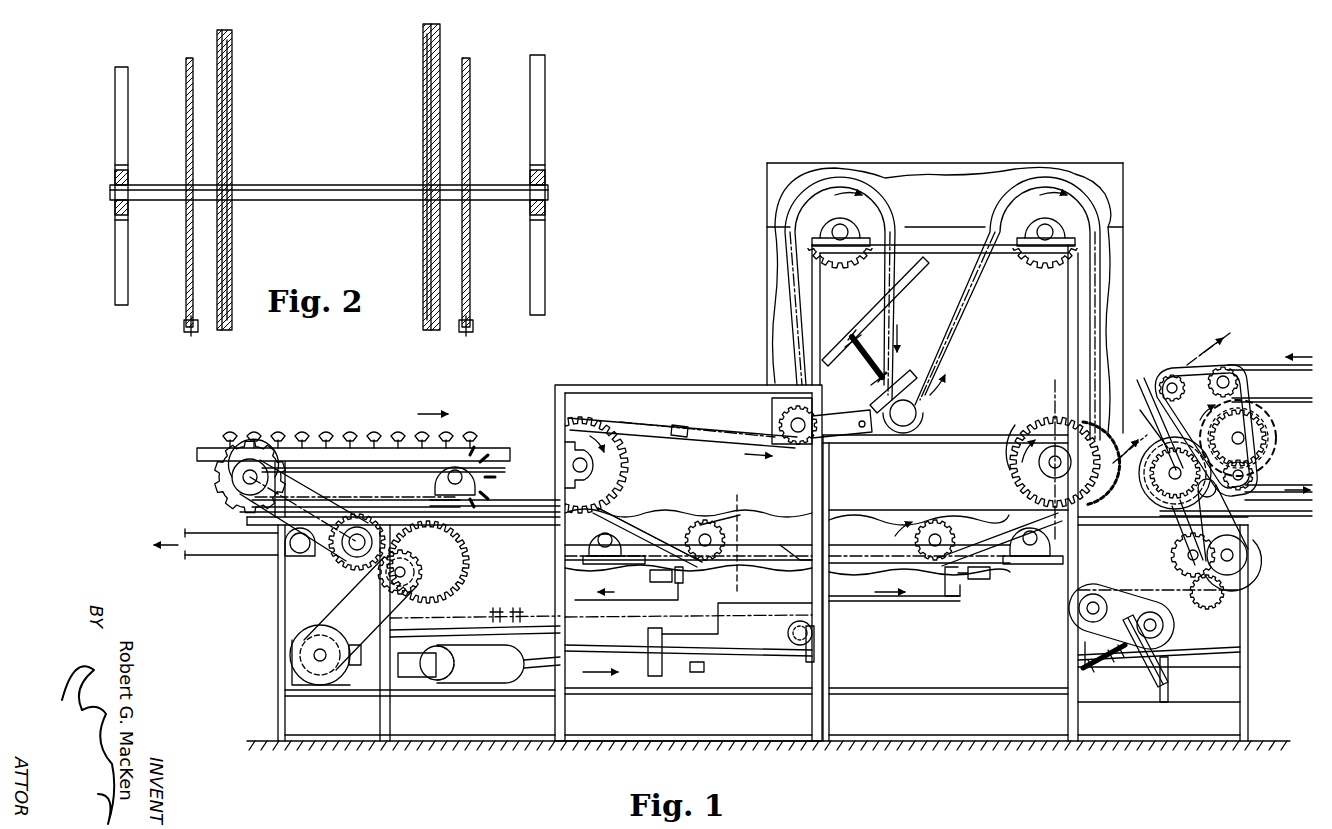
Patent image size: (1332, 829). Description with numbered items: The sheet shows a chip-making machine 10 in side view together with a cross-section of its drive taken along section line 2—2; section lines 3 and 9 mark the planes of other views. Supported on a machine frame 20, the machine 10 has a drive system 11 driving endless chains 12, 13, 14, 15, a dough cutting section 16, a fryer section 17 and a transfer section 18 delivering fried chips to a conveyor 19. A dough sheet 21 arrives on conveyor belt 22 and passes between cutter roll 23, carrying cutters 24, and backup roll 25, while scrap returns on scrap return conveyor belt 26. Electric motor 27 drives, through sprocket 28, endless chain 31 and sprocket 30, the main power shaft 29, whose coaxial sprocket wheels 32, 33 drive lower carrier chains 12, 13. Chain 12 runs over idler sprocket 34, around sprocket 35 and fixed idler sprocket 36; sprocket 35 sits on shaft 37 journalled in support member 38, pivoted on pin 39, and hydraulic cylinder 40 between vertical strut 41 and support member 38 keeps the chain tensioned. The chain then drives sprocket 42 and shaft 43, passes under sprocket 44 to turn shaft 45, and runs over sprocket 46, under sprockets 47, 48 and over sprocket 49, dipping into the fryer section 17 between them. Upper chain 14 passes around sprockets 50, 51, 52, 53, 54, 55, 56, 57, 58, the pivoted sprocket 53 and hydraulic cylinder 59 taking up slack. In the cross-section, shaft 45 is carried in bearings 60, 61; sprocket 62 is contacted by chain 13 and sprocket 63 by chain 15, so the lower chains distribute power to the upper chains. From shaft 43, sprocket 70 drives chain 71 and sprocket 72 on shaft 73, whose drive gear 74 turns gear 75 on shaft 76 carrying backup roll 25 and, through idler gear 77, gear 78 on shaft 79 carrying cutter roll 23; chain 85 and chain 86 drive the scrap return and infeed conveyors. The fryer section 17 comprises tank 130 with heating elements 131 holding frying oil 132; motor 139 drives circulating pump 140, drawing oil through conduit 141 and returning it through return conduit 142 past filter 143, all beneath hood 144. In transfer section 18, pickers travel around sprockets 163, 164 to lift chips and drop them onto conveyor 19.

In FIG. 1, the section line 2— 2 is at (1053, 383).
In FIG. 1, the section line 3- 3 is at (1179, 410).
In FIG. 1, the conveyor belt 9 is at (737, 497).
In FIG. 1, the machine 10 is at (1156, 262).
In FIG. 1, the drive system 11 is at (458, 590).
In FIG. 2, the lower carrier chain 12 is at (460, 327).
In FIG. 1, the lower carrier chain 12 is at (496, 620).
In FIG. 2, the lower carrier chain 13 is at (199, 329).
In FIG. 1, the lower carrier chain 13 is at (518, 622).
In FIG. 2, the upper carrier chain 14 is at (438, 50).
In FIG. 1, the upper carrier chain 14 is at (652, 522).
In FIG. 2, the upper carrier chain 15 is at (233, 44).
In FIG. 1, the upper carrier chain 15 is at (690, 425).
In FIG. 1, the dough cutting section 16 is at (1284, 464).
In FIG. 1, the fryer section 17 is at (840, 484).
In FIG. 1, the transfer section 18 is at (384, 412).
In FIG. 1, the conveyor 19 is at (192, 530).
In FIG. 1, the machine frame 20 is at (280, 618).
In FIG. 1, the dough sheet 21 is at (1258, 365).
In FIG. 1, the conveyor belt 22 is at (1290, 372).
In FIG. 1, the cutter roll 23 is at (1264, 436).
In FIG. 1, the cutters 24 is at (1268, 448).
In FIG. 1, the backup roll 25 is at (1162, 486).
In FIG. 1, the scrap return conveyor belt 26 is at (1305, 513).
In FIG. 1, the electric motor 27 is at (300, 677).
In FIG. 1, the sprocket 28 is at (303, 654).
In FIG. 1, the main power shaft 29 is at (428, 590).
In FIG. 1, the sprocket 30 is at (458, 560).
In FIG. 1, the endless chain 31 is at (340, 608).
In FIG. 1, the sprocket wheel 32 is at (360, 592).
In FIG. 1, the sprocket wheel 33 is at (498, 526).
In FIG. 1, the idler sprocket 34 is at (800, 646).
In FIG. 1, the sprocket 35 is at (1165, 628).
In FIG. 1, the fixed idler sprocket 36 is at (1128, 604).
In FIG. 1, the shaft 37 is at (1160, 636).
In FIG. 1, the support member 38 is at (1140, 662).
In FIG. 1, the pin 39 is at (1166, 678).
In FIG. 1, the hydraulic cylinder 40 is at (1082, 670).
In FIG. 1, the vertical strut 41 is at (1076, 714).
In FIG. 1, the sprocket 42 is at (1190, 584).
In FIG. 1, the shaft 43 is at (1250, 609).
In FIG. 2, the sprocket 44 is at (470, 70).
In FIG. 1, the sprocket 44 is at (1078, 478).
In FIG. 2, the shaft 45 is at (366, 192).
In FIG. 1, the shaft 45 is at (1048, 442).
In FIG. 1, the sprocket 46 is at (1056, 552).
In FIG. 1, the sprocket 47 is at (955, 545).
In FIG. 1, the sprocket 48 is at (722, 530).
In FIG. 1, the sprocket 49 is at (590, 552).
In FIG. 1, the sprocket 50 is at (596, 495).
In FIG. 1, the idler sprocket 51 is at (772, 420).
In FIG. 1, the sprocket 52 is at (880, 226).
In FIG. 1, the pivoted sprocket 53 is at (926, 396).
In FIG. 1, the sprocket 54 is at (1087, 224).
In FIG. 2, the sprocket 55 is at (425, 98).
In FIG. 1, the sprocket 55 is at (1007, 446).
In FIG. 1, the sprocket 56 is at (930, 526).
In FIG. 1, the sprocket 57 is at (726, 541).
In FIG. 1, the sprocket 58 is at (654, 574).
In FIG. 1, the hydraulic cylinder 59 is at (866, 365).
In FIG. 2, the bearing 60 is at (546, 180).
In FIG. 2, the bearing 61 is at (115, 183).
In FIG. 2, the sprocket 62 is at (186, 72).
In FIG. 2, the sprocket 63 is at (226, 86).
In FIG. 1, the sprocket 70 is at (1256, 586).
In FIG. 1, the chain 71 is at (1186, 558).
In FIG. 1, the sprocket 72 is at (1244, 558).
In FIG. 1, the shaft 73 is at (1200, 522).
In FIG. 1, the drive gear 74 is at (1283, 520).
In FIG. 1, the gear 75 is at (1165, 434).
In FIG. 1, the shaft 76 is at (1145, 392).
In FIG. 1, the idler gear 77 is at (1253, 480).
In FIG. 1, the gear 78 is at (1240, 402).
In FIG. 1, the shaft 79 is at (1256, 420).
In FIG. 1, the chain 85 is at (1165, 532).
In FIG. 1, the chain 86 is at (1195, 372).
In FIG. 1, the frying tank 130 is at (964, 590).
In FIG. 1, the heating elements 131 is at (992, 574).
In FIG. 1, the frying oil 132 is at (782, 560).
In FIG. 1, the motor 139 is at (430, 682).
In FIG. 1, the circulating pump 140 is at (492, 683).
In FIG. 1, the conduit 141 is at (588, 616).
In FIG. 1, the return conduit 142 is at (638, 676).
In FIG. 1, the filter 143 is at (664, 680).
In FIG. 1, the hood 144 is at (846, 514).
In FIG. 1, the sprocket 163 is at (436, 478).
In FIG. 1, the sprocket 164 is at (290, 474).